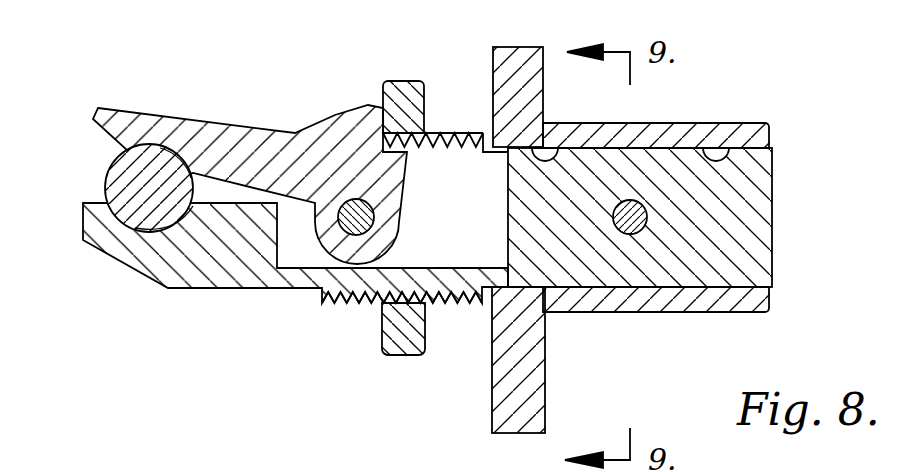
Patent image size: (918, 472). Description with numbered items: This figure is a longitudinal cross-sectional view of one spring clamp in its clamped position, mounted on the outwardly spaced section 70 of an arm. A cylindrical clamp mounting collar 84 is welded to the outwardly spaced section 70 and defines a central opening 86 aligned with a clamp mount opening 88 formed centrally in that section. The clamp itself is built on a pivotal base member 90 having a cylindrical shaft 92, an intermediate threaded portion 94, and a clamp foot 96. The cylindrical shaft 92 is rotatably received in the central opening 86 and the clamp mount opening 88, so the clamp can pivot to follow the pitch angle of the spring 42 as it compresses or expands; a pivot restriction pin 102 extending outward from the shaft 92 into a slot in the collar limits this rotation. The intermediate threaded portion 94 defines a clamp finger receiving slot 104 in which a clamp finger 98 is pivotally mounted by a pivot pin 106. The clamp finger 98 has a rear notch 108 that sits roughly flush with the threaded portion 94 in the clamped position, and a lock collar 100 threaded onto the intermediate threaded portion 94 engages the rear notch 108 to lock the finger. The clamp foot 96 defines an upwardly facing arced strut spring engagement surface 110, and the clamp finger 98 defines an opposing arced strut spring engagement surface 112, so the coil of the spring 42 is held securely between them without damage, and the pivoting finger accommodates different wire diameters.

The spring 42 is at (127, 180).
The outwardly spaced section 70 is at (513, 63).
The clamp mounting collar 84 is at (712, 302).
The central opening 86 is at (728, 162).
The clamp mount opening 88 is at (558, 157).
The pivotal base member 90 is at (316, 296).
The cylindrical shaft 92 is at (767, 228).
The intermediate threaded portion 94 is at (465, 130).
The clamp foot 96 is at (137, 258).
The clamp finger 98 is at (233, 143).
The lock collar 100 is at (397, 355).
The pivot restriction pin 102 is at (630, 234).
The clamp finger receiving slot 104 is at (443, 213).
The pivot pin 106 is at (360, 227).
The rear notch 108 is at (407, 152).
The arced strut spring engagement surface 110 is at (187, 212).
The arced strut spring engagement surface 112 is at (160, 160).